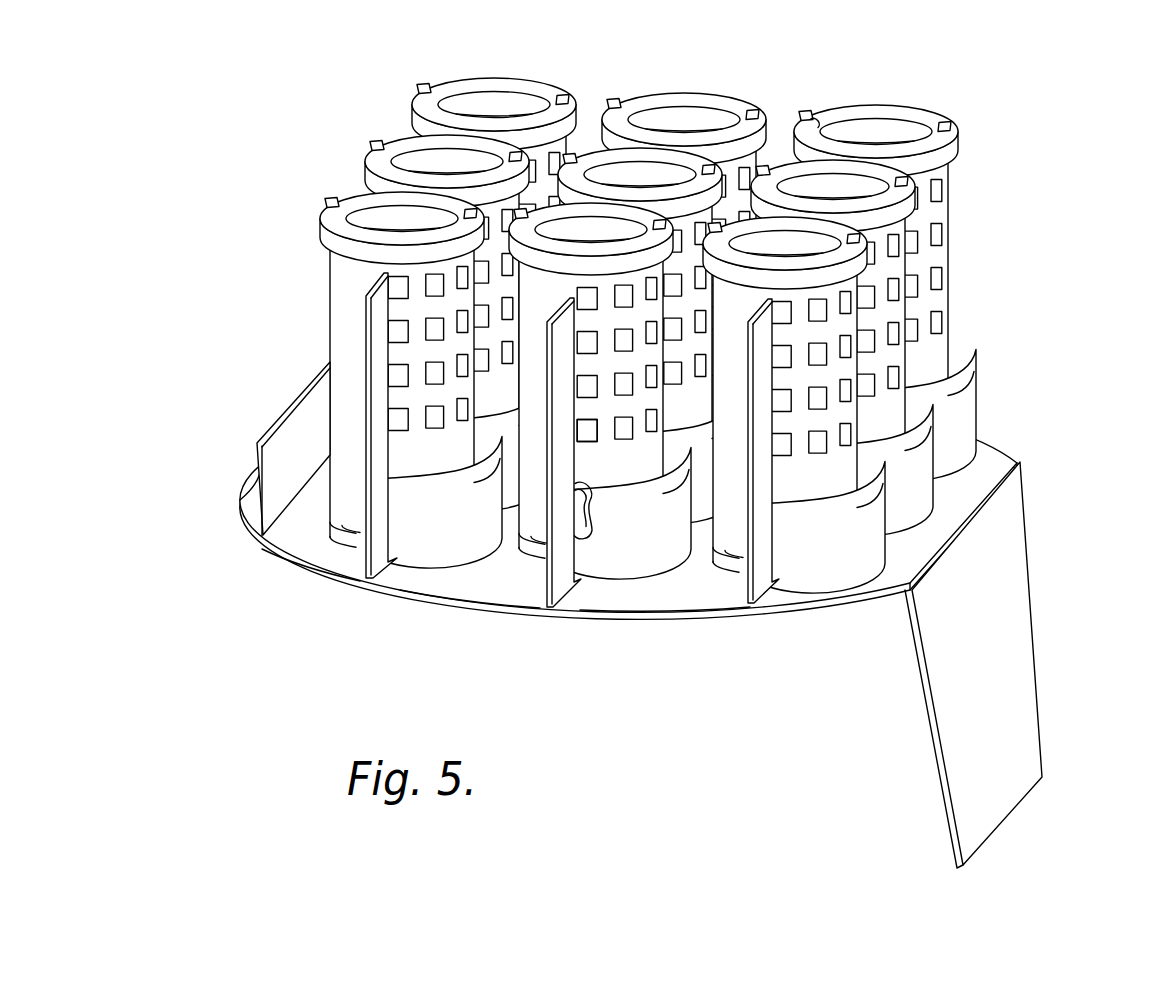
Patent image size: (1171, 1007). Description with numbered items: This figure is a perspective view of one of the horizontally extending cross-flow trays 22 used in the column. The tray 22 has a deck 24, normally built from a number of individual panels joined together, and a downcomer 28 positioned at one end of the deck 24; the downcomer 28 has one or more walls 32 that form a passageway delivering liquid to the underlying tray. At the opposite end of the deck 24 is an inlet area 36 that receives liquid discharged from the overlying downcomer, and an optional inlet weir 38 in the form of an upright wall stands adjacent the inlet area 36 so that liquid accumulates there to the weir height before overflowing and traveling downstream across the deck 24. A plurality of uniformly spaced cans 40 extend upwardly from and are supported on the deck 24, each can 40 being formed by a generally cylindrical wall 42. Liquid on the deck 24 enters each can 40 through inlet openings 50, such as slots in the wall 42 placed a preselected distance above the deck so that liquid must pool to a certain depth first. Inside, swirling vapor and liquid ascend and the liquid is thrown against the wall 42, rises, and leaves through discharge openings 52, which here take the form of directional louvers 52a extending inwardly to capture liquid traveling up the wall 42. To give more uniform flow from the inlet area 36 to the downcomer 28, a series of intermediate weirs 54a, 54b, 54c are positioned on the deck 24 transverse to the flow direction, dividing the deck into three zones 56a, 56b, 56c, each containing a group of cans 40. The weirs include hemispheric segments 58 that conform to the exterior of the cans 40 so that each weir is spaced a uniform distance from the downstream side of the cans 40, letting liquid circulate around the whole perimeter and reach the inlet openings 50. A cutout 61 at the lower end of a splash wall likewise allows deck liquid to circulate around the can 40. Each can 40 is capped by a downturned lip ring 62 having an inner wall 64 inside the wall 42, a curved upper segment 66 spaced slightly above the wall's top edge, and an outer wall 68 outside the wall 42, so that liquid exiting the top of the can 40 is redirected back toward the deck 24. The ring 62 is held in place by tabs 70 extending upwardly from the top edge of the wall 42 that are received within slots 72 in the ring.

The cross-flow tray 22 is at (595, 542).
The deck 24 is at (632, 598).
The downcomer 28 is at (981, 665).
The wall 32 is at (922, 715).
The inlet area 36 is at (245, 495).
The inlet weir 38 is at (292, 430).
The can 40 is at (390, 391).
The wall 42 is at (364, 388).
The inlet opening 50 is at (345, 491).
The discharge opening 52 is at (428, 364).
The directional louver 52a is at (643, 419).
The intermediate weir 54a is at (390, 562).
The intermediate weir 54b is at (600, 570).
The intermediate weir 54c is at (800, 585).
The zone 56a is at (293, 548).
The zone 56b is at (470, 587).
The zone 56c is at (730, 598).
The hemispheric segment 58 is at (455, 513).
The cutout 61 is at (601, 520).
The lip ring 62 is at (888, 113).
The inner wall 64 is at (880, 106).
The curved upper segment 66 is at (900, 118).
The outer wall 68 is at (912, 163).
The tab 70 is at (882, 102).
The slot 72 is at (825, 92).